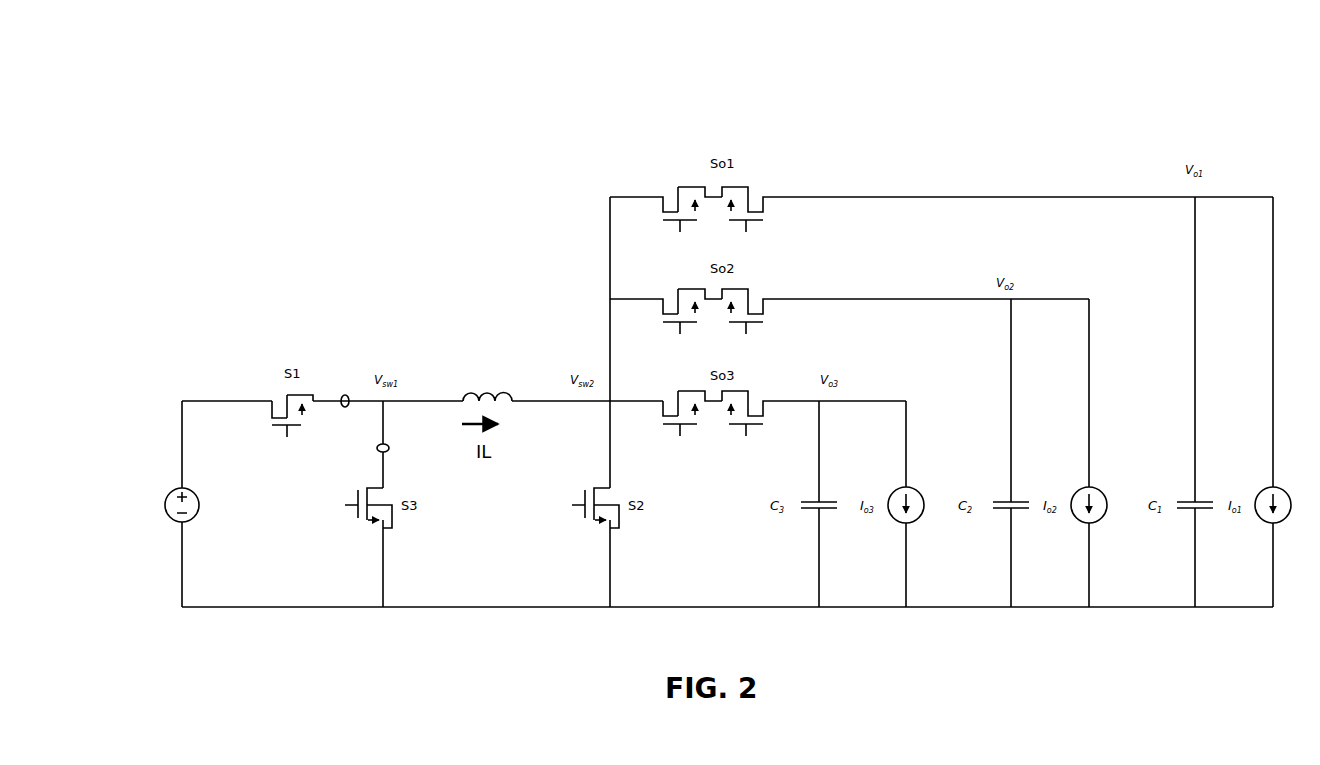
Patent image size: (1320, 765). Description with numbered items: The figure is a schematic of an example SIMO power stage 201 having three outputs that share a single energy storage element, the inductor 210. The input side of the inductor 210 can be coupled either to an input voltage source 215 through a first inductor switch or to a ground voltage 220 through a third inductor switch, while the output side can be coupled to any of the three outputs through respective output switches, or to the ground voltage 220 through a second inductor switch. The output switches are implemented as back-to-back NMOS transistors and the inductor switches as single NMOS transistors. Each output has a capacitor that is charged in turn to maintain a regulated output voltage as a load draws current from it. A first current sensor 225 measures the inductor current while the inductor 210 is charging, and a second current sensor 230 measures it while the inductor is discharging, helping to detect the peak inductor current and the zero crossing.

The SIMO power stage 201 is at (191, 79).
The inductor 210 is at (500, 357).
The input voltage source 215 is at (162, 488).
The ground voltage 220 is at (470, 612).
The first current sensor 225 is at (340, 410).
The second current sensor 230 is at (375, 447).